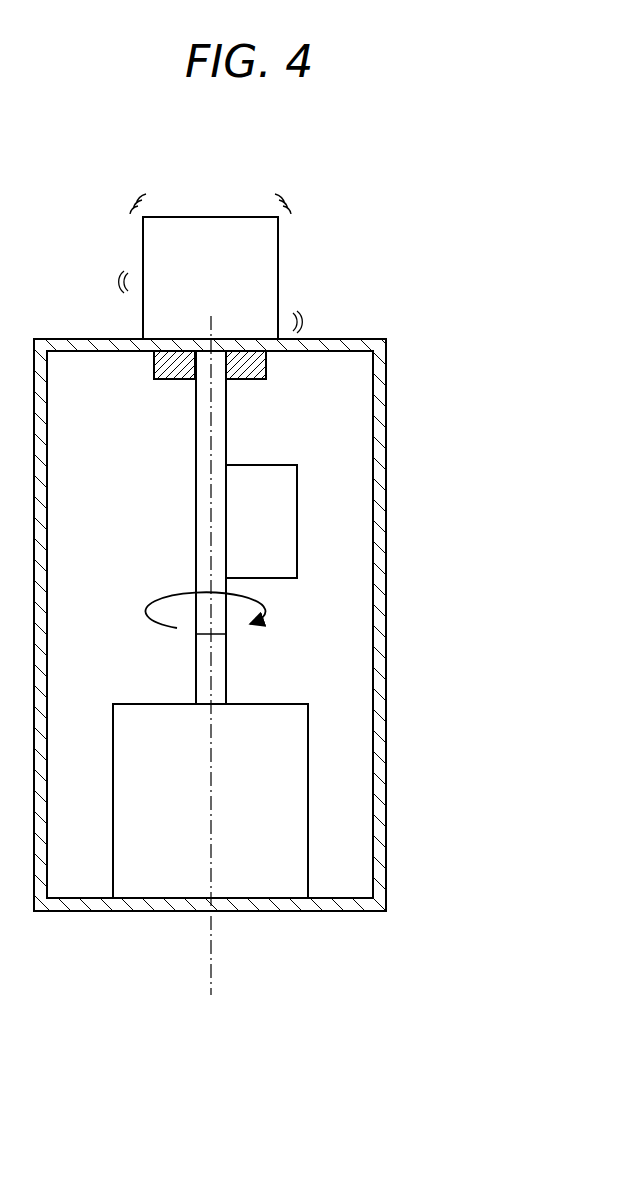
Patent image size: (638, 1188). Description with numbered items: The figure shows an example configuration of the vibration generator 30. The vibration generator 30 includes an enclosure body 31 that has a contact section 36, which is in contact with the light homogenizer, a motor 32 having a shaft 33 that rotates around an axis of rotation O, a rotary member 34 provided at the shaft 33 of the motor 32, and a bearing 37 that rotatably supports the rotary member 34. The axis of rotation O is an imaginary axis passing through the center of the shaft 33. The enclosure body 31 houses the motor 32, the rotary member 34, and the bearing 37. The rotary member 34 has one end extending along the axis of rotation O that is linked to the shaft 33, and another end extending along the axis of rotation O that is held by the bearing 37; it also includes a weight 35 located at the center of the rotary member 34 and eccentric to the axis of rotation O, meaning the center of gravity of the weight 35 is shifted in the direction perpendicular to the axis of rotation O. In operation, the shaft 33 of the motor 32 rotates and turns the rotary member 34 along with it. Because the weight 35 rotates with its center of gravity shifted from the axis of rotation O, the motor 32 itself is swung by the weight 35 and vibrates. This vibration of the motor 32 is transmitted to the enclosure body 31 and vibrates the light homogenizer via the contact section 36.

The vibration generator 30 is at (368, 178).
The enclosure body 31 is at (378, 612).
The motor 32 is at (308, 803).
The shaft 33 is at (226, 667).
The rotary member 34 is at (232, 434).
The weight 35 is at (282, 522).
The contact section 36 is at (278, 270).
The bearing 37 is at (266, 356).
The axis of rotation O is at (211, 963).